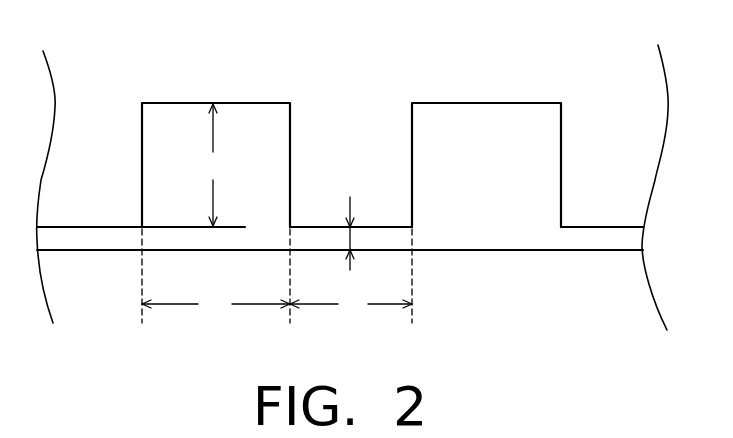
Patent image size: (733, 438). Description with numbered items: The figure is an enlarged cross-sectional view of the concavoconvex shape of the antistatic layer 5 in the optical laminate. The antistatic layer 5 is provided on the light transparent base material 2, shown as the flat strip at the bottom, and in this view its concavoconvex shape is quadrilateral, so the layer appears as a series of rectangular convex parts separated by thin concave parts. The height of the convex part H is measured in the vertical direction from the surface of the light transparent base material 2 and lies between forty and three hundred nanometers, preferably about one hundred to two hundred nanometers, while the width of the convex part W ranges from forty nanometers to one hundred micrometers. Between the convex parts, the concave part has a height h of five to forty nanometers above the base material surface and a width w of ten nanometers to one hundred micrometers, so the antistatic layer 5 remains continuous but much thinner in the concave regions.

The light transparent base material 2 is at (606, 278).
The antistatic layer 5 is at (516, 127).
The height of the convex part H is at (213, 165).
The height of the concave part h is at (350, 223).
The width of the convex part W is at (216, 304).
The width of the concave part w is at (351, 304).